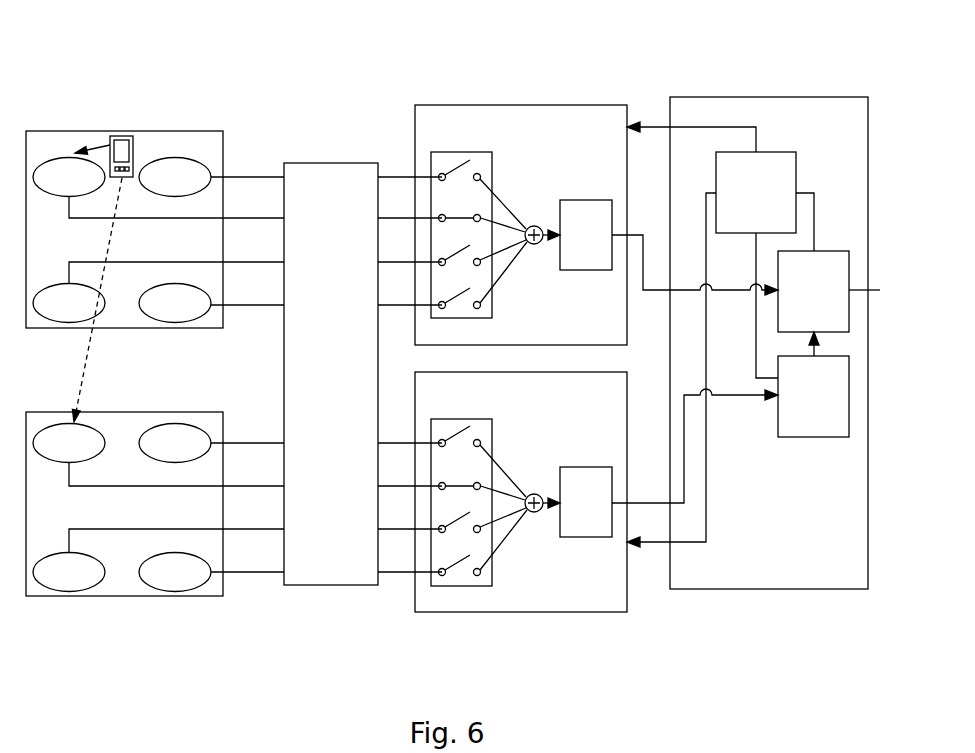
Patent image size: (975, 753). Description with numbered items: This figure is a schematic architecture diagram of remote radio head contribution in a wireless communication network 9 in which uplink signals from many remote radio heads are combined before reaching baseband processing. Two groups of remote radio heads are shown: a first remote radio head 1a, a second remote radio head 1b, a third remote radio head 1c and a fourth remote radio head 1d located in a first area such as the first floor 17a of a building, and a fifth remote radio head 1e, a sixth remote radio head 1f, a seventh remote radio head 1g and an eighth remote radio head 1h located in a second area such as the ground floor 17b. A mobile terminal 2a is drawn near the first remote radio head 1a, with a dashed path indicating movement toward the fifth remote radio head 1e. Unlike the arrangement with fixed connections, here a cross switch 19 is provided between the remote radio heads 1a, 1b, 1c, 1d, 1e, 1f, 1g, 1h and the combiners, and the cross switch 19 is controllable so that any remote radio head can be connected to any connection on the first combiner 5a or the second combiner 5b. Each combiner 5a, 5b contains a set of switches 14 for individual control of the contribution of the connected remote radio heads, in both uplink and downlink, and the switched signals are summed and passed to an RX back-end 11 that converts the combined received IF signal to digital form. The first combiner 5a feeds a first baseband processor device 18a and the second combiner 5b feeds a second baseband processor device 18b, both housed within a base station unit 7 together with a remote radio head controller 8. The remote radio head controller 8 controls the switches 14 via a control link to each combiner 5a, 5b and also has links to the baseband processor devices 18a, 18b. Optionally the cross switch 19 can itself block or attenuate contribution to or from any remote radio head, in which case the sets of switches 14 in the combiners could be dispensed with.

The first remote radio head 1a is at (58, 187).
The second remote radio head 1b is at (164, 187).
The third remote radio head 1c is at (58, 313).
The fourth remote radio head 1d is at (164, 313).
The fifth remote radio head 1e is at (58, 453).
The sixth remote radio head 1f is at (165, 453).
The seventh remote radio head 1g is at (58, 582).
The eighth remote radio head 1h is at (164, 582).
The mobile terminal 2a is at (133, 140).
The first combiner 5a is at (583, 105).
The second combiner 5b is at (583, 612).
The base station 7 is at (797, 97).
The remote radio head controller 8 is at (750, 175).
The wireless communication network 9 is at (730, 85).
The RX back-end 11 is at (575, 235).
The set of switches 14 is at (462, 152).
The first floor 17a is at (178, 131).
The ground floor 17b is at (170, 598).
The first baseband processor device 18a is at (798, 284).
The second baseband processor device 18b is at (798, 389).
The cross switch 19 is at (320, 163).